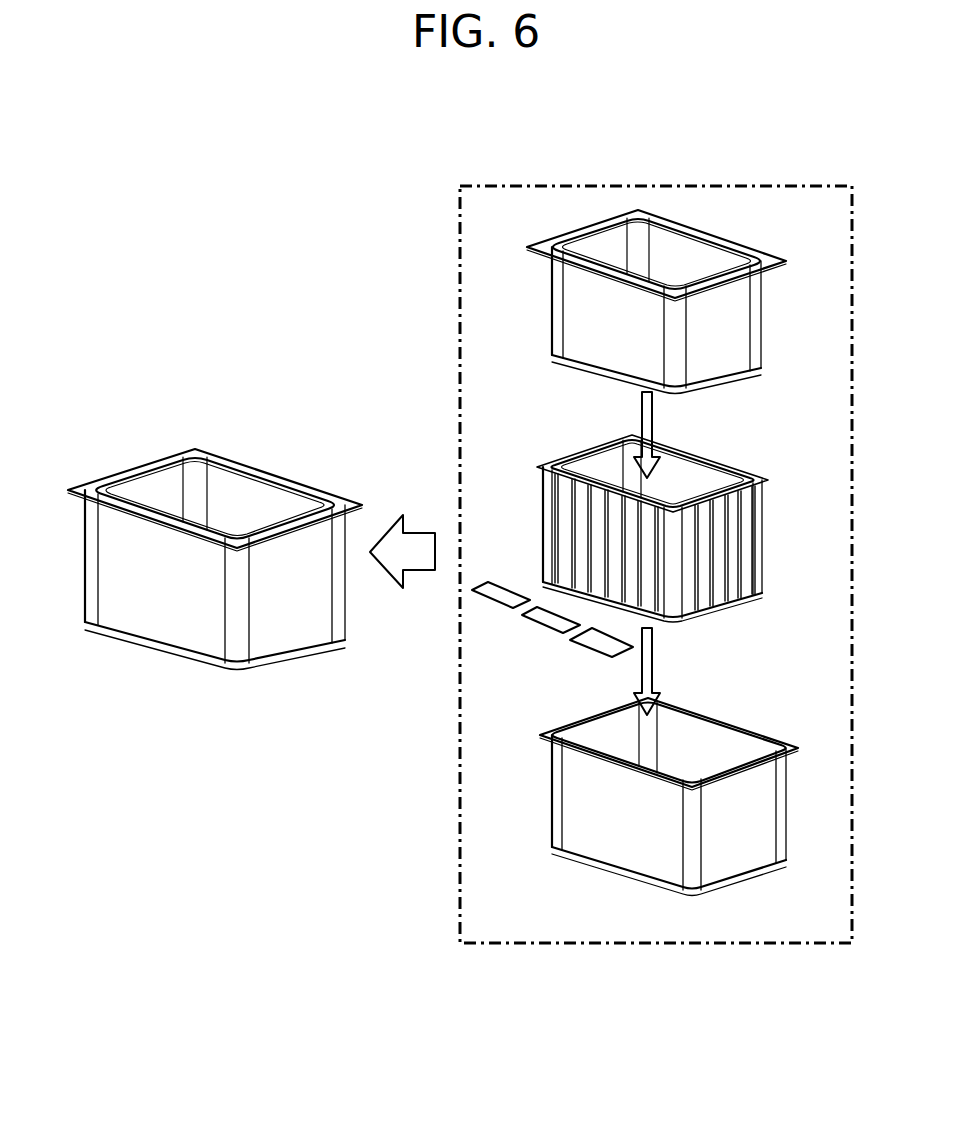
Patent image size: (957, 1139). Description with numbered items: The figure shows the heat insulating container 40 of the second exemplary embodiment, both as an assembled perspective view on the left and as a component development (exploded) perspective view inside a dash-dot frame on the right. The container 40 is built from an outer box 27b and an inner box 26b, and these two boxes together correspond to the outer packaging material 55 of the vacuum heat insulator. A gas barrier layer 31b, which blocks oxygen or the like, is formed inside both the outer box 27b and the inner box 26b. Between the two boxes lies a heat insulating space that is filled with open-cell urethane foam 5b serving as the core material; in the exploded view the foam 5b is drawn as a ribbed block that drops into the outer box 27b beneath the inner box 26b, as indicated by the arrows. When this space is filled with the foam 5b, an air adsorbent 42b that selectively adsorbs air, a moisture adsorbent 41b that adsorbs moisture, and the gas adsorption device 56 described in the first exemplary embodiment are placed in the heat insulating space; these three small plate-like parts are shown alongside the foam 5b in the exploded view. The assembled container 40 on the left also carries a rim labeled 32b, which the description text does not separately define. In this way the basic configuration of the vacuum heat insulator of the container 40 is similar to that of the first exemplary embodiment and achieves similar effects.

The heat insulating container 40 is at (215, 515).
The flange of storage container 32b is at (308, 483).
The inner box 26b is at (698, 255).
The outer box 27b is at (700, 720).
The outer packaging material 55 is at (682, 495).
The gas barrier layer 31b is at (683, 548).
The open-cell urethane foam 5b is at (700, 477).
The air adsorbent 42b is at (493, 592).
The gas adsorption device 56 is at (545, 615).
The moisture adsorbent 41b is at (598, 642).